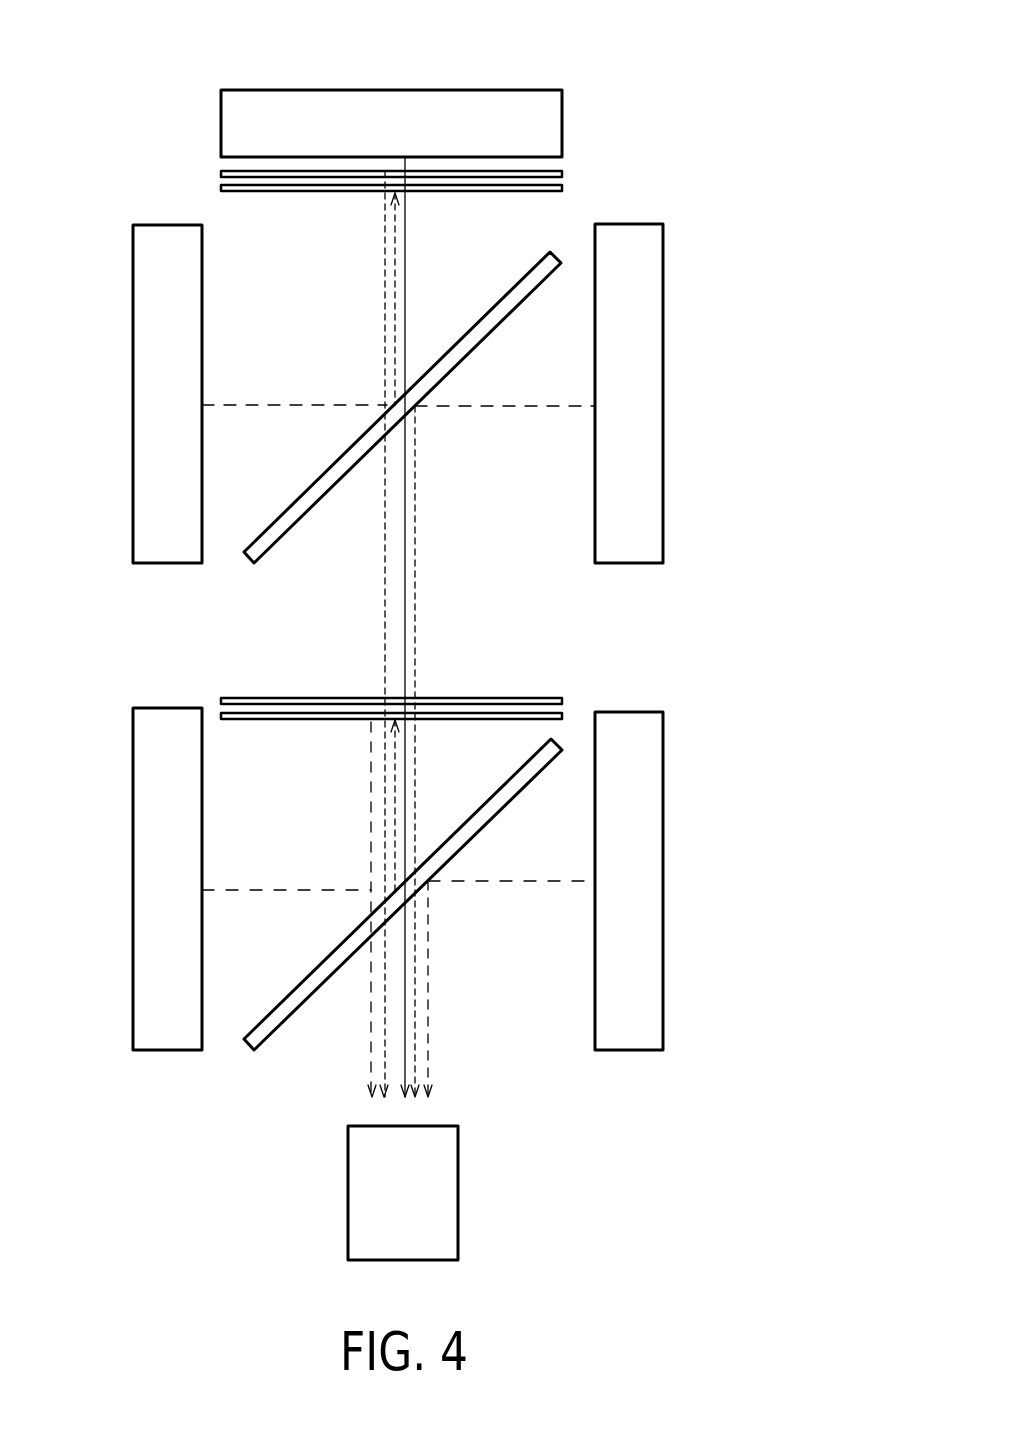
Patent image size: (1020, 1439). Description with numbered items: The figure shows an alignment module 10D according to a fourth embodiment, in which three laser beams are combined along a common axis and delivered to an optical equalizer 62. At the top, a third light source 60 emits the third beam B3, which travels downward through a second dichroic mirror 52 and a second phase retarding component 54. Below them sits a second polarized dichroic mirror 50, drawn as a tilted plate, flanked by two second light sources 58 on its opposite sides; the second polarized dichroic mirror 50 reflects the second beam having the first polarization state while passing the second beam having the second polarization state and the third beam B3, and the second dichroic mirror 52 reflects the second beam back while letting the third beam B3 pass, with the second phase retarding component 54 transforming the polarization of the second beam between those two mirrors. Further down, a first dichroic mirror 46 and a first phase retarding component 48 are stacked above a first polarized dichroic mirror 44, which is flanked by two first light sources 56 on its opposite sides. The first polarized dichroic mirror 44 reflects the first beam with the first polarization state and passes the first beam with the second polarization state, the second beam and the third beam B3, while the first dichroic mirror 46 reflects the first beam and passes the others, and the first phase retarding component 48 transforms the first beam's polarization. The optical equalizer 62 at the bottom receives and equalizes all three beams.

The alignment module 10D is at (716, 78).
The third light source 60 is at (399, 90).
The second dichroic mirror 52 is at (562, 171).
The second phase retarding component 54 is at (562, 187).
The second light source 58 is at (133, 445).
The second polarized dichroic mirror 50 is at (297, 520).
The first dichroic mirror 46 is at (562, 699).
The first phase retarding component 48 is at (562, 716).
The first light source 56 is at (133, 930).
The first polarized dichroic mirror 44 is at (297, 1006).
The optical equalizer 62 is at (458, 1197).
The third beam B3 is at (405, 258).